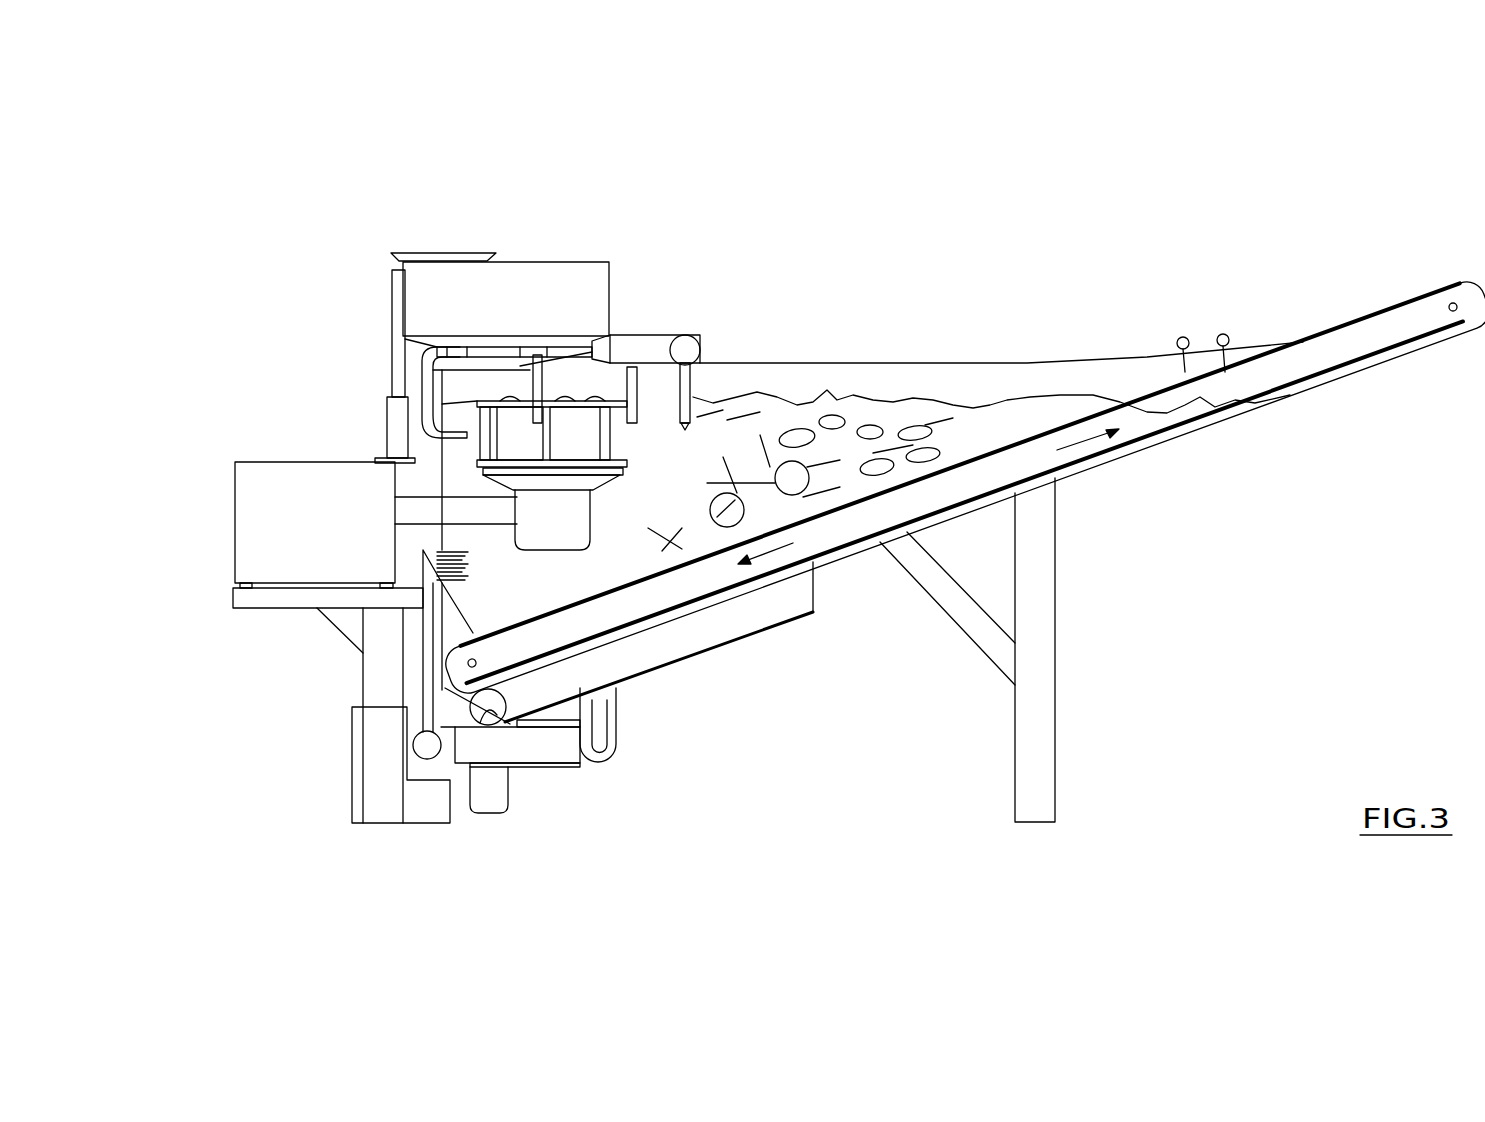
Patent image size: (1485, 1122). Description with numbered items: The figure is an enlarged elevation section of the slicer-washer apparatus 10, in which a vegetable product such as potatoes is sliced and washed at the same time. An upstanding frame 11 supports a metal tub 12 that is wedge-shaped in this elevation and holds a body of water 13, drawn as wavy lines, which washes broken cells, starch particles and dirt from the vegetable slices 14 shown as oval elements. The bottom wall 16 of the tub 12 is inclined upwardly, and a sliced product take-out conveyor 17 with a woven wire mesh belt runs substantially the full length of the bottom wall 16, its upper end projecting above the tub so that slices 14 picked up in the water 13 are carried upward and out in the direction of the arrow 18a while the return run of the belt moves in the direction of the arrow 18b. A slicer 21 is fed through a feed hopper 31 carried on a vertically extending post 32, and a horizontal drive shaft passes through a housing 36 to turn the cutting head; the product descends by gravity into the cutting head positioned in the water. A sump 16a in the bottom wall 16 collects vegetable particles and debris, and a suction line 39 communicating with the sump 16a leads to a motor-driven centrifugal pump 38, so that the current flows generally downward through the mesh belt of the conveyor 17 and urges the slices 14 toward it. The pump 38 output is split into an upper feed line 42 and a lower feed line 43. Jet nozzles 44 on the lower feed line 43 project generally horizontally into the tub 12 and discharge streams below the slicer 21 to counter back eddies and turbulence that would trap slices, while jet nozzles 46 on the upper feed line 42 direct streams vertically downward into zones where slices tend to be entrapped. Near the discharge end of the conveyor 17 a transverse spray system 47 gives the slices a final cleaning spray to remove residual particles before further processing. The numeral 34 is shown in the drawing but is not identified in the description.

The slicer-washer apparatus 10 is at (762, 360).
The upstanding frame 11 is at (1055, 727).
The tub 12 is at (893, 363).
The body of water 13 is at (800, 403).
The vegetable slices 14 is at (945, 450).
The bottom wall 16 is at (1283, 398).
The sump 16a is at (703, 640).
The sliced product take-out conveyor 17 is at (1363, 317).
The arrow indicating direction of top conveyor run 18a is at (1080, 447).
The arrow indicating direction of return run 18b is at (772, 553).
The slicer 21 is at (545, 262).
The feed hopper 31 is at (437, 253).
The vertically extending post 32 is at (392, 290).
The control box 34 is at (297, 462).
The housing 36 is at (537, 515).
The motor-driven centrifugal pump 38 is at (347, 805).
The suction line 39 is at (518, 727).
The upper feed line 42 is at (636, 338).
The lower feed line 43 is at (413, 748).
The jet nozzles 44 is at (417, 647).
The jet nozzles 46 is at (722, 365).
The transverse spray system 47 is at (1224, 334).